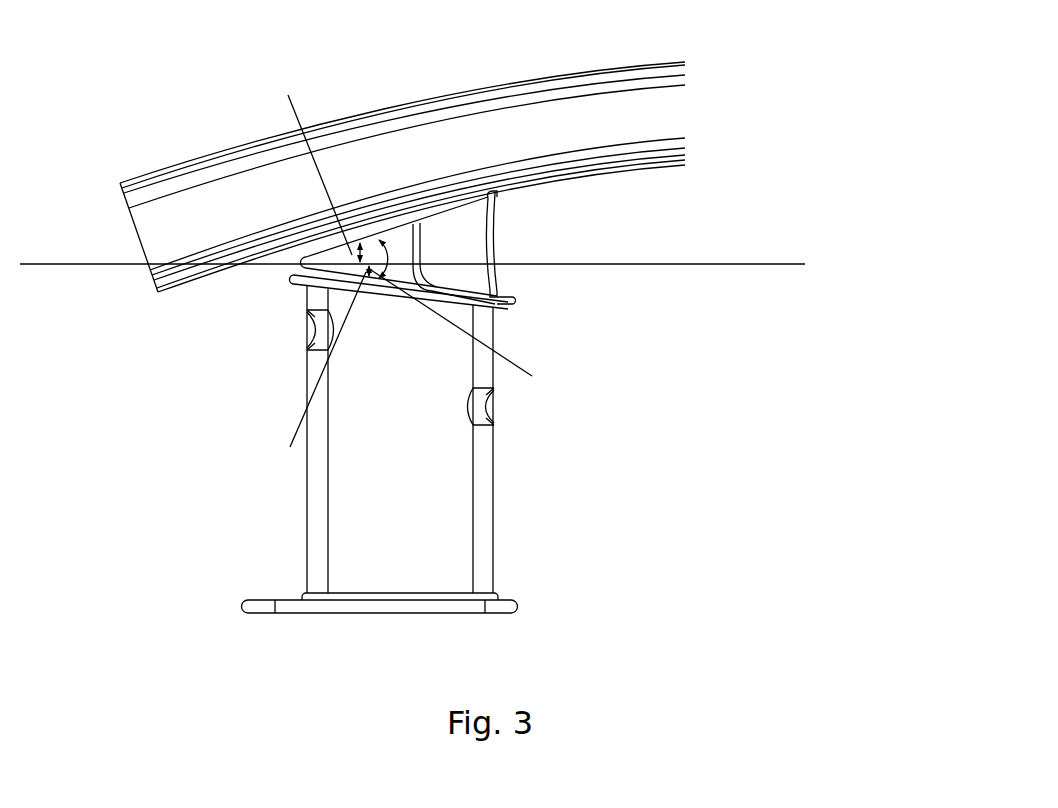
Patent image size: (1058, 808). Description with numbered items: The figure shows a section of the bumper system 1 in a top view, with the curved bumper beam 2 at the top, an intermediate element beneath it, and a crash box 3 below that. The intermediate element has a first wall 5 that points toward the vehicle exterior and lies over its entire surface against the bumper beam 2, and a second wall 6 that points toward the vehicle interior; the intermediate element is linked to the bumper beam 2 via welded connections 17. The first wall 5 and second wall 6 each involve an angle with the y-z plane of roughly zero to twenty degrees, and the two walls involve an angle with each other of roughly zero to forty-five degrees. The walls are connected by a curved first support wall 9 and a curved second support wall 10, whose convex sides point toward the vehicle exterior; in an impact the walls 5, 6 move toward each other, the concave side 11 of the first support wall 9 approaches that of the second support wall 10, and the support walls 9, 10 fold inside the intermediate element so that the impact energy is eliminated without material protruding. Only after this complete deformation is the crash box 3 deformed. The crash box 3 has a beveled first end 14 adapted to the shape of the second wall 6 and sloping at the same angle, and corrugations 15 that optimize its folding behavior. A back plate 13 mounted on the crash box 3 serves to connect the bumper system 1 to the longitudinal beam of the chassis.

The bumper system 1 is at (712, 115).
The bumper beam 2 is at (363, 148).
The crash box 3 is at (421, 462).
The first wall 5 is at (323, 250).
The second wall 6 is at (468, 295).
The first support wall 9 is at (502, 284).
The second support wall 10 is at (421, 232).
The concave side of first support wall 11 is at (498, 246).
The back plate 13 is at (500, 606).
The beveled first end 14 is at (325, 292).
The corrugations 15 is at (314, 331).
The welded connection 17 is at (497, 193).